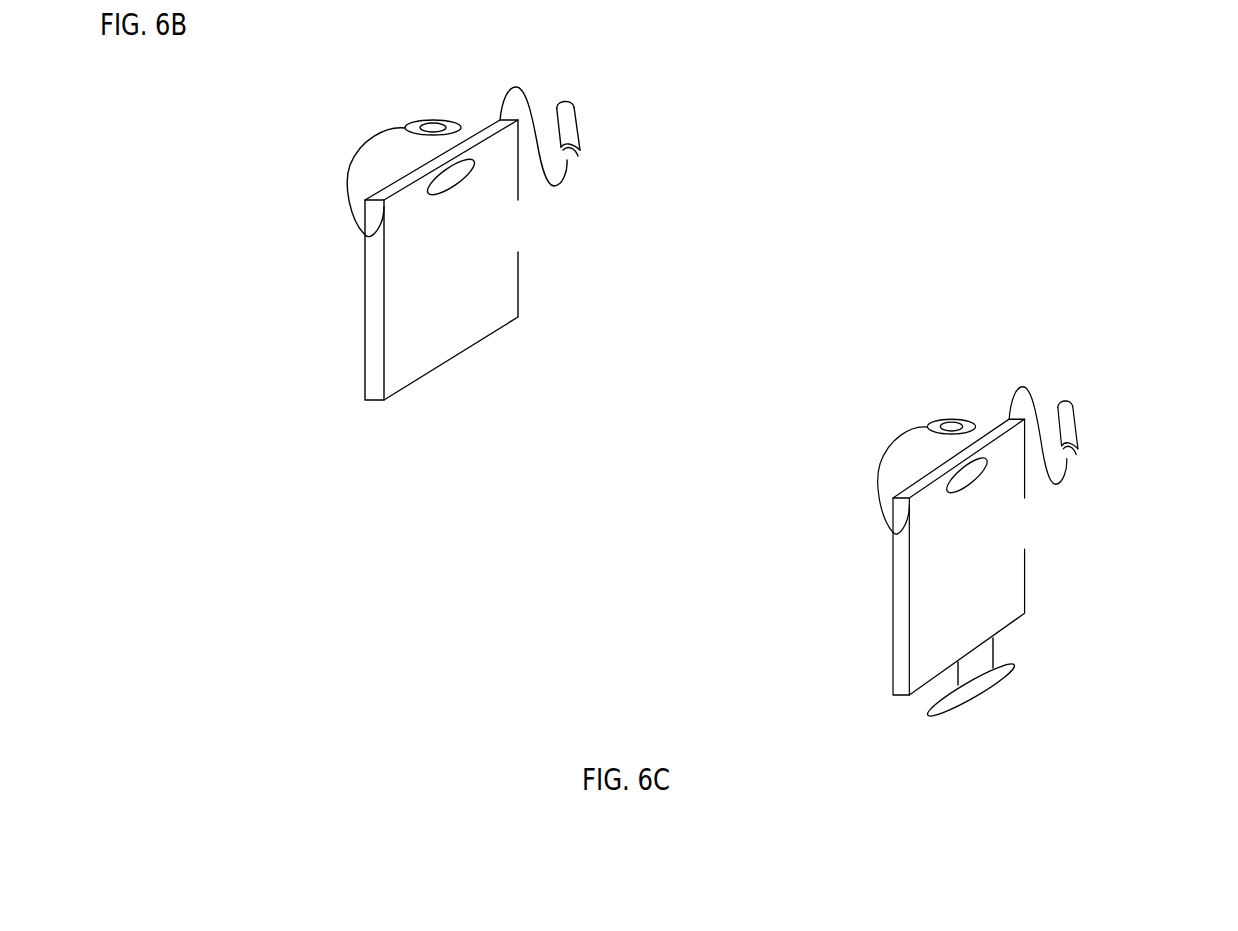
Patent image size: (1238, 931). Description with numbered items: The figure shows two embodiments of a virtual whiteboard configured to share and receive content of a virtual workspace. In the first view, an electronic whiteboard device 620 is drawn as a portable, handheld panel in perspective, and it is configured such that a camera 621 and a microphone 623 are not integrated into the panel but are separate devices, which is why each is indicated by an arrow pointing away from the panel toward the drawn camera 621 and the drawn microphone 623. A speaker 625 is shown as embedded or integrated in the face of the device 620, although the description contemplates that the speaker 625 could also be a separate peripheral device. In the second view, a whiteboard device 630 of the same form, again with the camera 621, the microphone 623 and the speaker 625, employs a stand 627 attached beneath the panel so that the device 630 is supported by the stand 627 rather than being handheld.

In FIG. 6B, the electronic whiteboard device 620 is at (303, 468).
In FIG. 6B, the camera 621 is at (344, 158).
In FIG. 6C, the camera 621 is at (875, 453).
In FIG. 6B, the microphone 623 is at (622, 134).
In FIG. 6C, the microphone 623 is at (1112, 436).
In FIG. 6B, the speaker 625 is at (475, 192).
In FIG. 6C, the speaker 625 is at (993, 490).
In FIG. 6C, the stand 627 is at (993, 647).
In FIG. 6C, the whiteboard device 630 is at (898, 802).